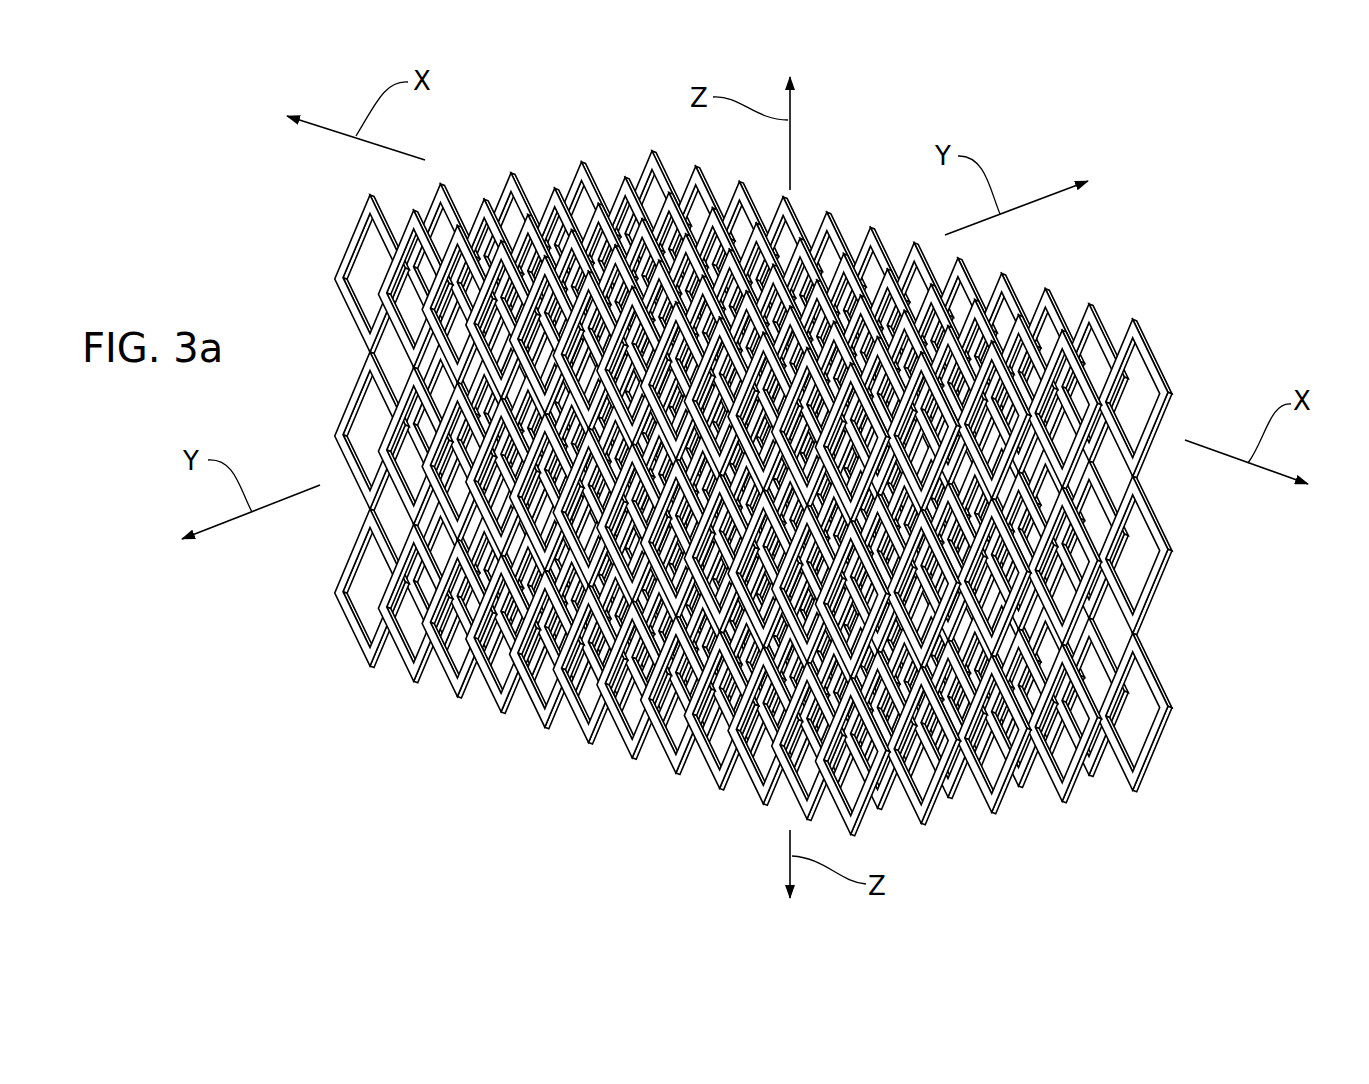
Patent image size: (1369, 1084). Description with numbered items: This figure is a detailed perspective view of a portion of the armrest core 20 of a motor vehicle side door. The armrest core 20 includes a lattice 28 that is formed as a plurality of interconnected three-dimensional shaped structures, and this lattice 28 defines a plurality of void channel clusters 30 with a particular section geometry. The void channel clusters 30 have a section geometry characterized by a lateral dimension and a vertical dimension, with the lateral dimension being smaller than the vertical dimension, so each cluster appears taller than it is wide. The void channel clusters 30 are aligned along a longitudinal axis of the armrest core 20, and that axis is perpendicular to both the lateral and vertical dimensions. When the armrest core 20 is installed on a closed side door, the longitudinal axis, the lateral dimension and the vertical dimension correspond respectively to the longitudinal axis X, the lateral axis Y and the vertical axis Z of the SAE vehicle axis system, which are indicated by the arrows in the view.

The armrest core 20 is at (1052, 143).
The lattice 28 is at (355, 625).
The void channel cluster 30 is at (360, 274).